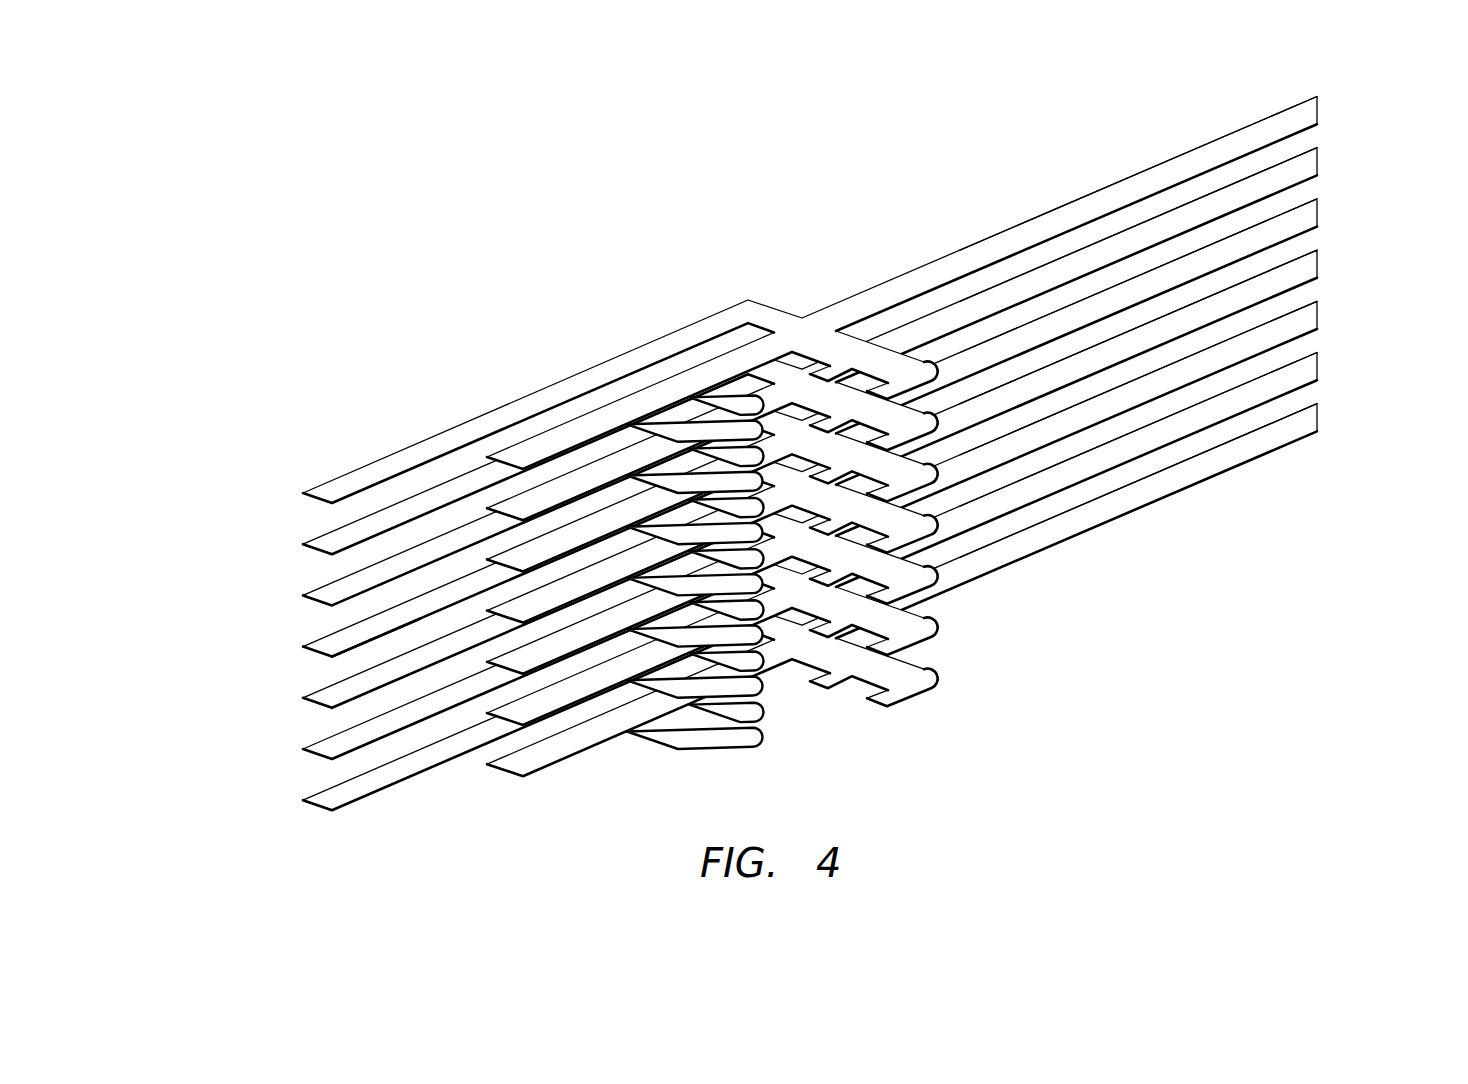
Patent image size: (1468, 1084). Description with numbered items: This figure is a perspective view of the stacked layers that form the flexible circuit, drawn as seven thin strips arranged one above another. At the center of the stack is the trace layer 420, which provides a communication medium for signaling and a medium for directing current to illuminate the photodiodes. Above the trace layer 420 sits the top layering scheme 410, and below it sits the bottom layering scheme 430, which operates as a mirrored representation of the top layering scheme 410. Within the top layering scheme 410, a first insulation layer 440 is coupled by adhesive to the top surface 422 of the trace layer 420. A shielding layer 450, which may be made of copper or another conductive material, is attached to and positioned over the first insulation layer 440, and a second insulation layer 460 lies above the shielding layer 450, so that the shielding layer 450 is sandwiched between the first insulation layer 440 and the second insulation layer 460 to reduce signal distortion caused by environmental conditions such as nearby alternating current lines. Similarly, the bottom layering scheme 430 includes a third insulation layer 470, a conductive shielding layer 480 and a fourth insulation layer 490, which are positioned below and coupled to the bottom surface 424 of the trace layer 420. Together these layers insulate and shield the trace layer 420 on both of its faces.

The top layering scheme 410 is at (1330, 85).
The trace layer 420 is at (1280, 283).
The bottom layering scheme 430 is at (1330, 292).
The second insulation layer 460 is at (328, 483).
The shielding layer 450 is at (323, 535).
The first insulation layer 440 is at (323, 588).
The top surface 422 is at (323, 642).
The bottom surface 424 is at (317, 660).
The fourth insulation layer 490 is at (330, 698).
The conductive shielding layer 480 is at (327, 750).
The third insulation layer 470 is at (327, 801).